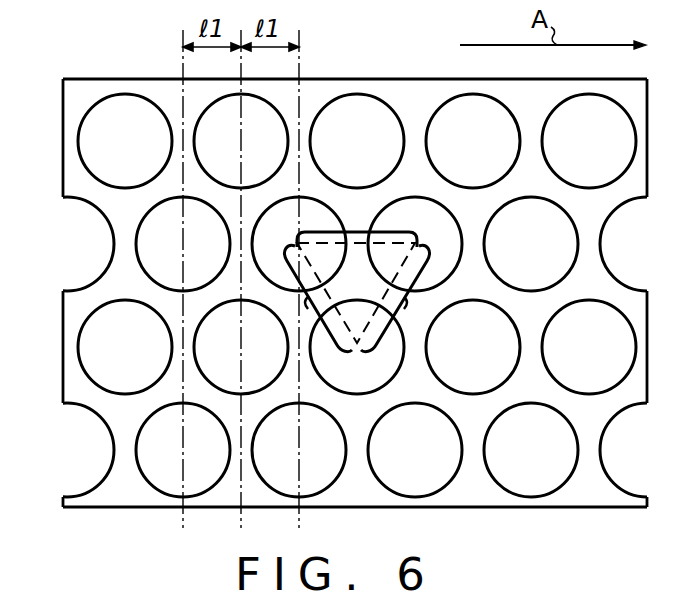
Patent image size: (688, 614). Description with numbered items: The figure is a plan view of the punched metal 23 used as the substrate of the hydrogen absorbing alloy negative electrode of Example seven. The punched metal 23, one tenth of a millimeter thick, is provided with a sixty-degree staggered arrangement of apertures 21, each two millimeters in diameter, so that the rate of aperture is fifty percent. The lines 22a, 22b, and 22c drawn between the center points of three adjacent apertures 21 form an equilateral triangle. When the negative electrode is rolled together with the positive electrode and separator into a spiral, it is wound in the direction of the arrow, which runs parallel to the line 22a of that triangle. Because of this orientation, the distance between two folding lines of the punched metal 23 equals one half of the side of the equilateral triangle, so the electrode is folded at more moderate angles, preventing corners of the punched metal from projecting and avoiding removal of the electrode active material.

The apertures 21 is at (147, 224).
The line 22a is at (357, 230).
The line 22b is at (311, 308).
The line 22c is at (403, 300).
The punched metal 23 is at (156, 74).